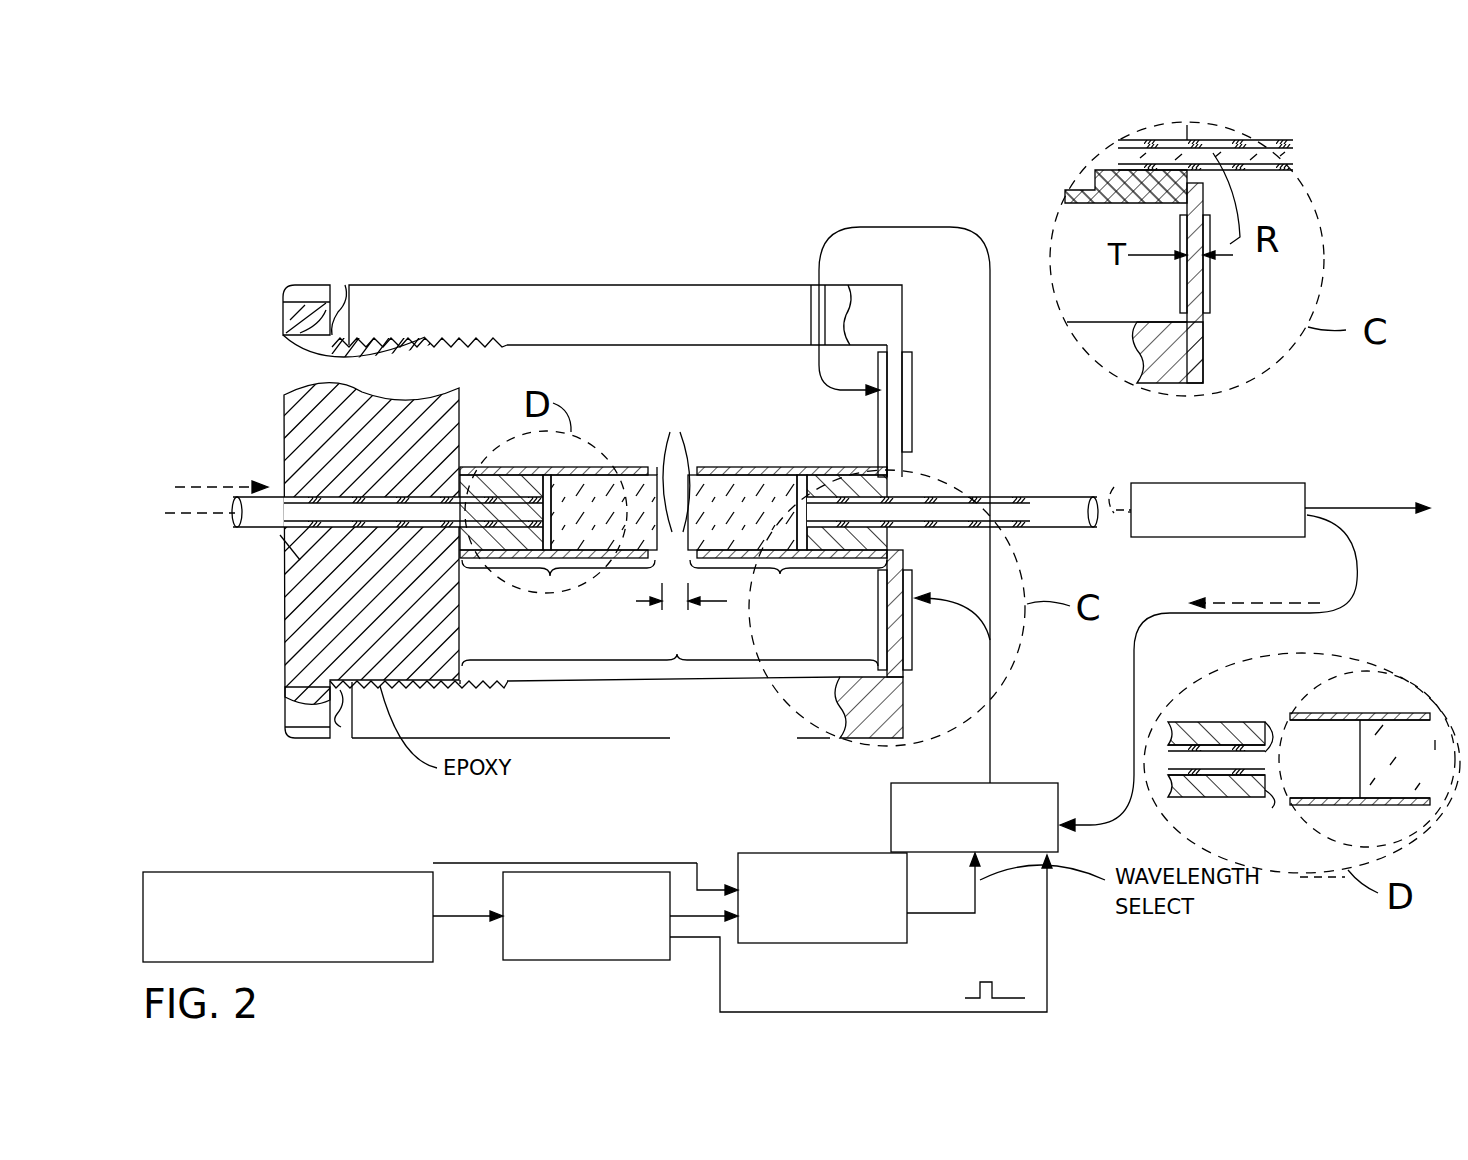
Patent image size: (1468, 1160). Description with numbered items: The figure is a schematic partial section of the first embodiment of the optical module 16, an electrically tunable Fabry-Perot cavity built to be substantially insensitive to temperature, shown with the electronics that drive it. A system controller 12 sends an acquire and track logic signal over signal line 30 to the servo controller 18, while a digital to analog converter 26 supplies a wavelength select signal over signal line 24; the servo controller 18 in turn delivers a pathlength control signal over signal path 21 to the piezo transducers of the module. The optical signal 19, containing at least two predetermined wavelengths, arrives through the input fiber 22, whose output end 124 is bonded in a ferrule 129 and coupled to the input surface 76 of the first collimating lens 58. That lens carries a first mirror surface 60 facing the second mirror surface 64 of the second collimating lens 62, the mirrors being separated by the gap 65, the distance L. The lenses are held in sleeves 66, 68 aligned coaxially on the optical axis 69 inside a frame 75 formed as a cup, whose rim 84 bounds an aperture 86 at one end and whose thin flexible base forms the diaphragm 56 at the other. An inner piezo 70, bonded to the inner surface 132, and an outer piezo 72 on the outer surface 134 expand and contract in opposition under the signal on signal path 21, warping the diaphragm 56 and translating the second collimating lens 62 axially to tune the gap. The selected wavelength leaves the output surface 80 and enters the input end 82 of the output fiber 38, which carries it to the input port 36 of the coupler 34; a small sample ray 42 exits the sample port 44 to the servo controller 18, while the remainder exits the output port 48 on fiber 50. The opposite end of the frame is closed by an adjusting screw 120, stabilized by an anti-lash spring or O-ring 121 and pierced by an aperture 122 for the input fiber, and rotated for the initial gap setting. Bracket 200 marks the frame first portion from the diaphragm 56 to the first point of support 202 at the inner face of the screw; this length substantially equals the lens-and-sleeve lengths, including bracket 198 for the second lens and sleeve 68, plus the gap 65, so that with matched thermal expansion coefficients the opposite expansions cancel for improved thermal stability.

The system controller 12 is at (406, 917).
The optical module 16 is at (797, 180).
The servo controller 18 is at (896, 820).
The optical signal 19 is at (224, 484).
The signal path 21 is at (992, 736).
The input fiber 22 is at (243, 528).
The signal line 24 is at (968, 913).
The digital to analog converter 26 is at (870, 853).
The signal line 30 is at (1047, 964).
The coupler 34 is at (1206, 520).
The input port 36 is at (1128, 513).
The output fiber 38 is at (1110, 425).
The ray 42 is at (1277, 603).
The sample port 44 is at (1307, 518).
The coupler output port 48 is at (1307, 506).
The fiber 50 is at (1427, 513).
The diaphragm 56 is at (900, 350).
The first collimating lens 58 is at (578, 512).
The first mirror surface 60 is at (657, 467).
The second collimating lens 62 is at (718, 519).
The second mirror surface 64 is at (697, 467).
The gap 65 is at (659, 597).
The sleeve 66 is at (576, 467).
The sleeve 68 is at (842, 467).
The optical axis 69 is at (203, 510).
The inner piezo 70 is at (878, 636).
The outer piezo 72 is at (912, 638).
The frame 75 is at (606, 255).
The input surface 76 is at (551, 520).
The second lens output surface 80 is at (800, 510).
The input end 82 is at (918, 512).
The rim 84 is at (352, 332).
The aperture 86 is at (470, 369).
The adjusting screw 120 is at (300, 290).
The spring or O-ring 121 is at (340, 300).
The aperture 122 is at (280, 536).
The output end 124 is at (867, 596).
The ferrule 129 is at (1268, 795).
The inner surface 132 is at (880, 453).
The electrode 134 is at (913, 453).
The bracket 198 is at (788, 585).
The bracket distance 200 is at (670, 645).
The first point of support 202 is at (462, 688).